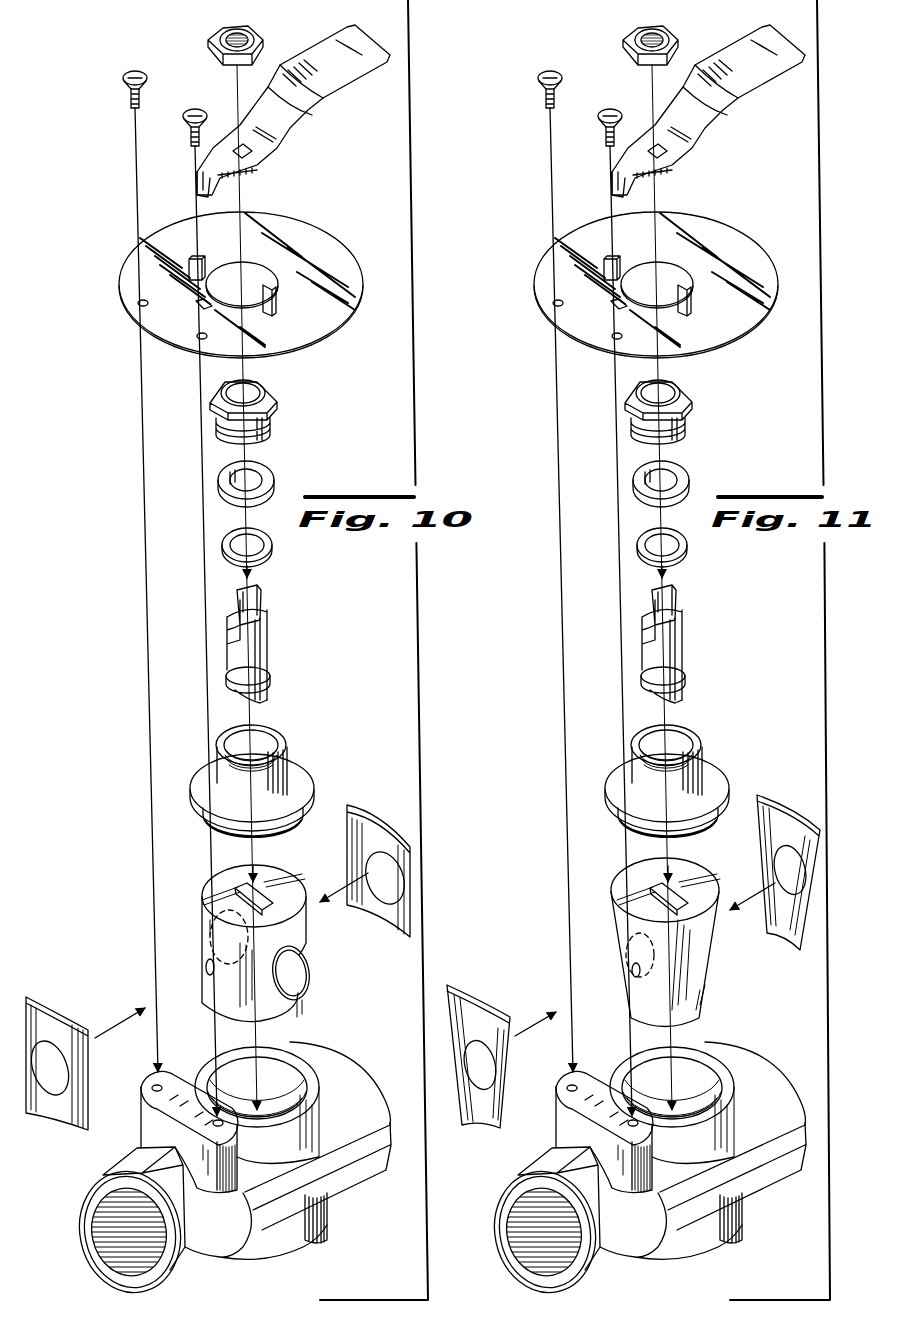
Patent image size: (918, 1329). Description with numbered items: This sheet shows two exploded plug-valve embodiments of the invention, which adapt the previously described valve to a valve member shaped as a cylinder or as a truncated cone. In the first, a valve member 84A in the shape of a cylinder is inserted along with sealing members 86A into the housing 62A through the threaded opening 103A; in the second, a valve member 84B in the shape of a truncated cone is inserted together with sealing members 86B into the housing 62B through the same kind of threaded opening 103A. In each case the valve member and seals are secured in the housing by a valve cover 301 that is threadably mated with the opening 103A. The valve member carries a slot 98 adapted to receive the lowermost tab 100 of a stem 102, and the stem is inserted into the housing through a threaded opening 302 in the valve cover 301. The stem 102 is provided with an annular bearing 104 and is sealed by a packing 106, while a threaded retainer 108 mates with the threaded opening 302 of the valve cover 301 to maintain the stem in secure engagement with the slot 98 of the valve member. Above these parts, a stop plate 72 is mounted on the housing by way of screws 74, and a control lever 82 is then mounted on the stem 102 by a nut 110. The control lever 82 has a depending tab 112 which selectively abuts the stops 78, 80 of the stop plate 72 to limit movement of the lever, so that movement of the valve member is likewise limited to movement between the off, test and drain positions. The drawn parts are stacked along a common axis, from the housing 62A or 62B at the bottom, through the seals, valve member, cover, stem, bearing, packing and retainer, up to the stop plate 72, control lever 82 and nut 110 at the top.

In FIG. 10, the screws 74 is at (135, 72).
In FIG. 11, the screws 74 is at (585, 573).
In FIG. 10, the nut 110 is at (253, 26).
In FIG. 11, the nut 110 is at (669, 555).
In FIG. 10, the control lever 82 is at (355, 78).
In FIG. 11, the control lever 82 is at (709, 110).
In FIG. 10, the depending tab 112 is at (197, 184).
In FIG. 11, the depending tab 112 is at (593, 191).
In FIG. 10, the stop plate 72 is at (322, 248).
In FIG. 11, the stop plate 72 is at (658, 278).
In FIG. 10, the stop 78 is at (203, 262).
In FIG. 11, the stop 78 is at (605, 289).
In FIG. 10, the stop 80 is at (277, 306).
In FIG. 11, the stop 80 is at (703, 306).
In FIG. 10, the threaded retainer 108 is at (273, 400).
In FIG. 11, the threaded retainer 108 is at (685, 408).
In FIG. 10, the packing 106 is at (273, 476).
In FIG. 11, the packing 106 is at (694, 476).
In FIG. 10, the annular bearing 104 is at (271, 556).
In FIG. 11, the annular bearing 104 is at (689, 553).
In FIG. 10, the stem 102 is at (270, 646).
In FIG. 11, the stem 102 is at (692, 642).
In FIG. 10, the lowermost tab 100 is at (271, 690).
In FIG. 11, the lowermost tab 100 is at (692, 684).
In FIG. 10, the threaded opening 302 is at (277, 736).
In FIG. 11, the threaded opening 302 is at (687, 733).
In FIG. 10, the valve cover 301 is at (301, 778).
In FIG. 11, the valve cover 301 is at (693, 785).
In FIG. 10, the slot 98 is at (266, 885).
In FIG. 11, the slot 98 is at (672, 874).
In FIG. 10, the valve member 84A is at (306, 1004).
In FIG. 11, the valve member 84B is at (704, 1006).
In FIG. 10, the sealing members 86A is at (397, 802).
In FIG. 11, the sealing members 86B is at (797, 797).
In FIG. 10, the threaded opening 103A is at (313, 1072).
In FIG. 11, the threaded opening 103A is at (713, 1085).
In FIG. 10, the housing 62A is at (351, 1195).
In FIG. 11, the housing 62B is at (644, 1172).